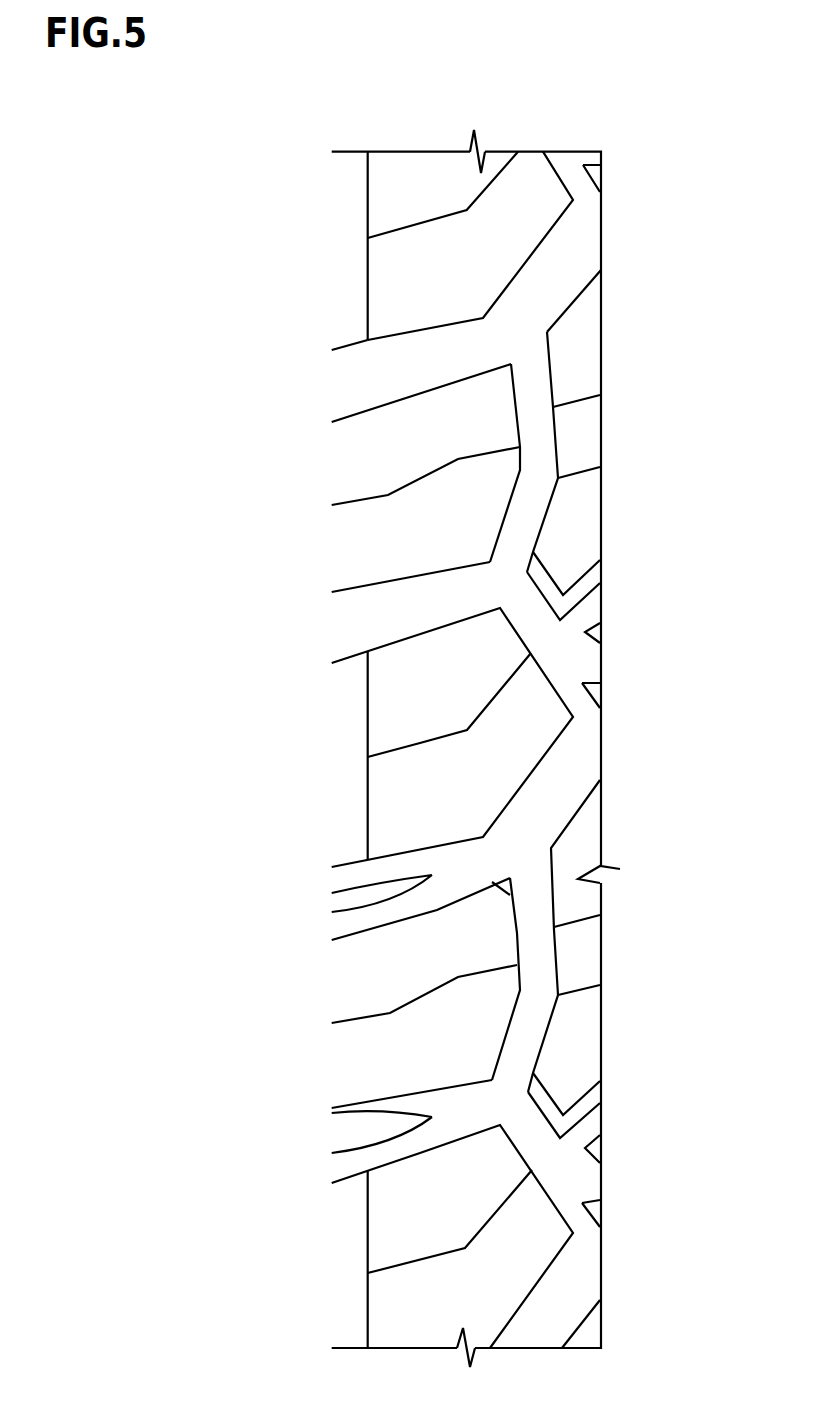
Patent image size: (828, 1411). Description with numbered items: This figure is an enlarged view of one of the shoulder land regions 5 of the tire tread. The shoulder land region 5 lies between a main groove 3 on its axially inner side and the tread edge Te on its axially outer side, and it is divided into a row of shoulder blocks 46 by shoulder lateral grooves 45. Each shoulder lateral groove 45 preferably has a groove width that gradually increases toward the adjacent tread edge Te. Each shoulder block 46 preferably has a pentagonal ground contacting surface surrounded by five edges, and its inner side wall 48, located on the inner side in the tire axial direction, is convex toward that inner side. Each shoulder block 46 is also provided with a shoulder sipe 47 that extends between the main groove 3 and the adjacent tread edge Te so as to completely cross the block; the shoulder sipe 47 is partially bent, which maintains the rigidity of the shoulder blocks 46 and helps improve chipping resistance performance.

The main groove 3 is at (568, 245).
The shoulder land region 5 is at (425, 188).
The tread edge Te is at (332, 450).
The shoulder lateral groove 45 is at (437, 362).
The shoulder block 46 is at (427, 530).
The shoulder sipe 47 is at (362, 503).
The inner side wall 48 is at (550, 752).